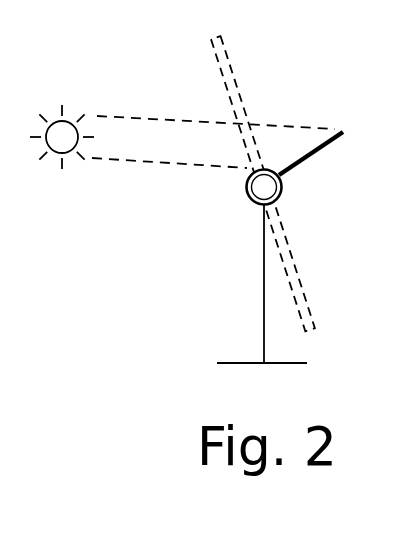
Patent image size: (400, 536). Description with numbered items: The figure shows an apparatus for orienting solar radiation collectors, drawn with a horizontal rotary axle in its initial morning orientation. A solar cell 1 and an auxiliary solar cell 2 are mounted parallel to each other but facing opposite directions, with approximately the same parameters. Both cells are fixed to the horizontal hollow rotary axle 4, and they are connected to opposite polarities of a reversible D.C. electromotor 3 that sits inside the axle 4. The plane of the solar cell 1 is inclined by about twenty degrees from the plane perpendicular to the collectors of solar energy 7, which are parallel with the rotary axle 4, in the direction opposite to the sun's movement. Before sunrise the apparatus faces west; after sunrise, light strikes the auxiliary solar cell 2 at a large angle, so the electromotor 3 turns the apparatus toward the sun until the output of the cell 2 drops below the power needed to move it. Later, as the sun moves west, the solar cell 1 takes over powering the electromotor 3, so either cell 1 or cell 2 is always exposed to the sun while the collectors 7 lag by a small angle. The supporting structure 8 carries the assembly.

The solar cell 1 is at (320, 153).
The auxiliary solar cell 2 is at (301, 161).
The reversible D.C. electromotor 3 is at (270, 190).
The hollow rotary axle 4 is at (249, 198).
The collectors of solar energy 7 is at (310, 310).
The support mast 8 is at (260, 336).